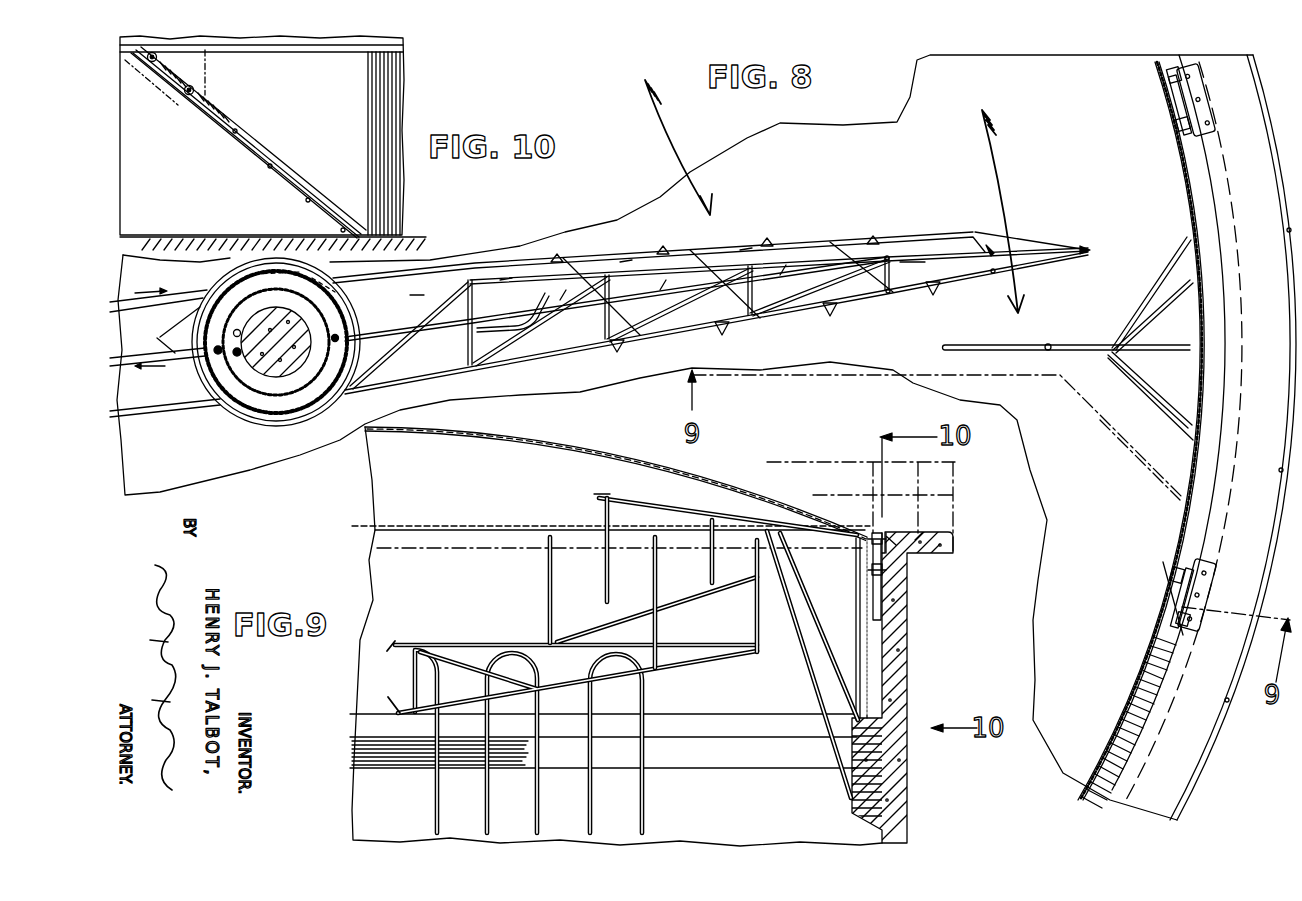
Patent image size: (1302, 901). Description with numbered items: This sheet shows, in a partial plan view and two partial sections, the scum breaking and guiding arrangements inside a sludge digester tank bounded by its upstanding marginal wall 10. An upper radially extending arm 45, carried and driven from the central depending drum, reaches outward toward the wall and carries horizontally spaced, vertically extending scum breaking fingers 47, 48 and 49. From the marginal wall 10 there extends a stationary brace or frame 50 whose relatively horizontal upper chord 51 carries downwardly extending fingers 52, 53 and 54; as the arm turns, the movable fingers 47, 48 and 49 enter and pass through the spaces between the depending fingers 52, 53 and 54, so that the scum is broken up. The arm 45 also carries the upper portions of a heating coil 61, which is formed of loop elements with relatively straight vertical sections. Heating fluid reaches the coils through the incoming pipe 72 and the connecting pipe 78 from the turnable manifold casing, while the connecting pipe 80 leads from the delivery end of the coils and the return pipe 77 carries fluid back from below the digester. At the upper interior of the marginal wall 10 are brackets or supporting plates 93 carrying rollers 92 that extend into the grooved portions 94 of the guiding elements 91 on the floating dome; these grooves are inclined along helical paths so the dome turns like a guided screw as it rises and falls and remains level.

In FIG. 8, the upstanding marginal wall 10 is at (1213, 500).
In FIG. 9, the upstanding marginal wall 10 is at (901, 665).
In FIG. 8, the upper radially extending arm 45 is at (563, 350).
In FIG. 8, the scum breaking finger 47 is at (889, 256).
In FIG. 9, the scum breaking finger 47 is at (548, 585).
In FIG. 8, the scum breaking finger 48 is at (990, 248).
In FIG. 9, the scum breaking finger 48 is at (652, 577).
In FIG. 8, the scum breaking finger 49 is at (1093, 249).
In FIG. 9, the scum breaking finger 49 is at (754, 560).
In FIG. 8, the stationary brace or frame 50 is at (1118, 340).
In FIG. 9, the stationary brace or frame 50 is at (830, 622).
In FIG. 8, the upper chord 51 is at (998, 347).
In FIG. 9, the upper chord 51 is at (606, 496).
In FIG. 9, the depending finger 52 is at (709, 570).
In FIG. 9, the depending finger 53 is at (604, 590).
In FIG. 9, the depending finger 54 is at (803, 610).
In FIG. 8, the heating coil 61 is at (504, 319).
In FIG. 8, the incoming heating fluid pipe 72 is at (218, 354).
In FIG. 8, the return pipe 77 is at (237, 356).
In FIG. 8, the connecting pipe 78 is at (165, 352).
In FIG. 8, the connecting pipe 80 is at (362, 336).
In FIG. 10, the guiding element 91 is at (268, 165).
In FIG. 8, the guiding element 91 is at (1172, 620).
In FIG. 9, the guiding element 91 is at (879, 597).
In FIG. 10, the roller 92 is at (186, 96).
In FIG. 8, the roller 92 is at (1170, 600).
In FIG. 9, the roller 92 is at (872, 567).
In FIG. 10, the bracket or supporting plate 93 is at (193, 72).
In FIG. 8, the bracket or supporting plate 93 is at (1203, 585).
In FIG. 9, the bracket or supporting plate 93 is at (884, 535).
In FIG. 10, the grooved portion 94 is at (258, 154).
In FIG. 8, the grooved portion 94 is at (1180, 630).